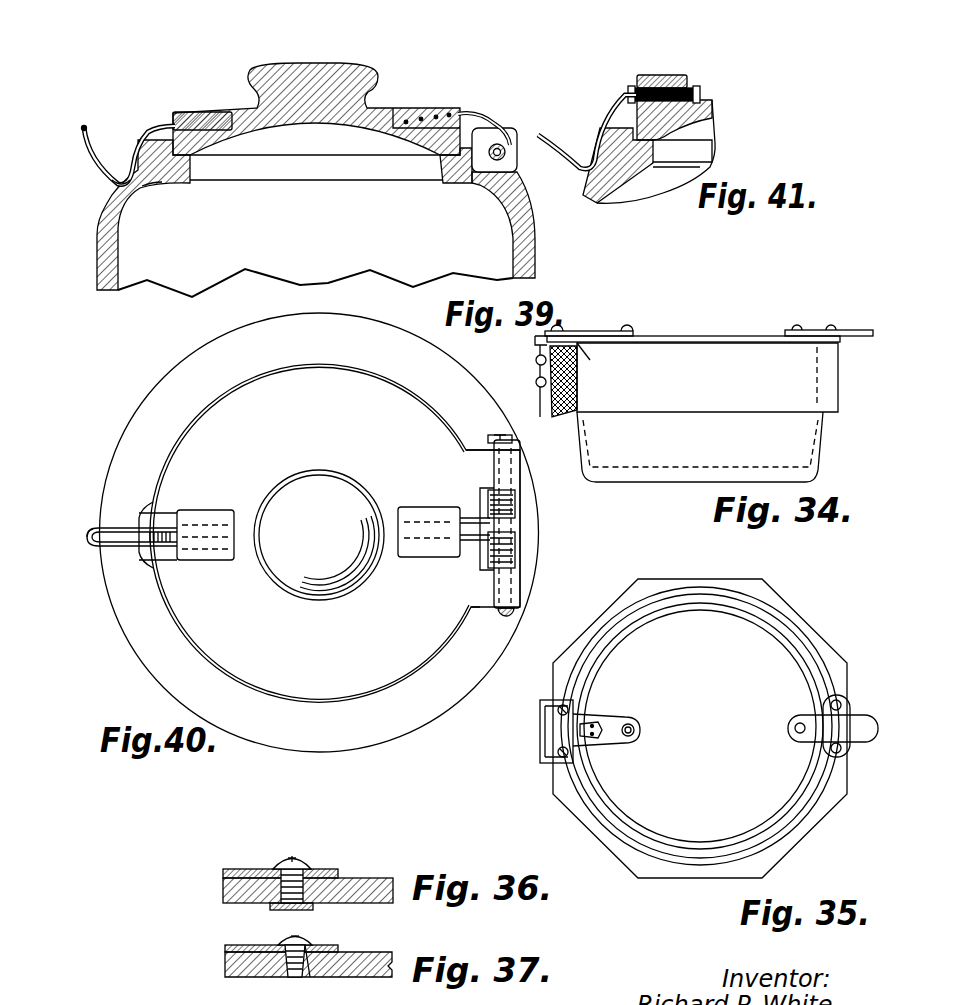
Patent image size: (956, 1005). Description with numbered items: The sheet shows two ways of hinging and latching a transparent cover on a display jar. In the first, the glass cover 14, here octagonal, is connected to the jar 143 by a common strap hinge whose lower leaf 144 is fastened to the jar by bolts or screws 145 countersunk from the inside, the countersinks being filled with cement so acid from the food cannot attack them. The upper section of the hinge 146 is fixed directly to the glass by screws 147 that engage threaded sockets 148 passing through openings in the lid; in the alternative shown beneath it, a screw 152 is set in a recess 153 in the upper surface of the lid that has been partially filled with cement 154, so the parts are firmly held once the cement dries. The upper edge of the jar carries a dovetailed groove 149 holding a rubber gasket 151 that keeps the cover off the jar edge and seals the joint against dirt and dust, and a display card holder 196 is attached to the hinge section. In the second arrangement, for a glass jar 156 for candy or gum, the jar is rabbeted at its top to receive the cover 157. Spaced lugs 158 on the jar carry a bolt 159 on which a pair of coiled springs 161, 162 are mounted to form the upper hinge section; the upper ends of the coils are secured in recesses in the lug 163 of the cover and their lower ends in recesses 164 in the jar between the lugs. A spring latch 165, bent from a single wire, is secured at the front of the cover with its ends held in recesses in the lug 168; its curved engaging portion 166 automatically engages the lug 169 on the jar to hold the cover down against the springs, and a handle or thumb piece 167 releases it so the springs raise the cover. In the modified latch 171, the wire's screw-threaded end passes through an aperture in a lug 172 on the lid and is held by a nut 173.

In FIG. 34, the cover 14 is at (729, 333).
In FIG. 35, the cover 14 is at (812, 628).
In FIG. 36, the cover 14 is at (215, 892).
In FIG. 37, the cover 14 is at (217, 966).
In FIG. 34, the jar 143 is at (667, 487).
In FIG. 35, the jar 143 is at (790, 620).
In FIG. 34, the lower leaf 144 is at (549, 354).
In FIG. 35, the lower leaf 144 is at (545, 730).
In FIG. 34, the bolts or screws 145 is at (537, 382).
In FIG. 34, the upper section of the hinge 146 is at (537, 342).
In FIG. 35, the upper section of the hinge 146 is at (622, 699).
In FIG. 36, the upper section of the hinge 146 is at (246, 868).
In FIG. 37, the upper section of the hinge 146 is at (262, 945).
In FIG. 34, the screws 147 is at (557, 331).
In FIG. 35, the screws 147 is at (636, 730).
In FIG. 36, the screws 147 is at (303, 860).
In FIG. 36, the threaded sockets 148 is at (270, 907).
In FIG. 34, the dovetailed groove 149 is at (580, 353).
In FIG. 34, the rubber gasket 151 is at (580, 333).
In FIG. 35, the rubber gasket 151 is at (760, 608).
In FIG. 37, the screw 152 is at (305, 940).
In FIG. 37, the recess 153 is at (304, 970).
In FIG. 37, the cement 154 is at (288, 975).
In FIG. 39, the glass jar 156 is at (535, 262).
In FIG. 41, the glass jar 156 is at (593, 198).
In FIG. 40, the glass jar 156 is at (153, 393).
In FIG. 39, the cover 157 is at (393, 100).
In FIG. 41, the cover 157 is at (713, 102).
In FIG. 40, the cover 157 is at (192, 459).
In FIG. 39, the lugs 158 is at (497, 133).
In FIG. 40, the lugs 158 is at (515, 458).
In FIG. 39, the bolt 159 is at (507, 152).
In FIG. 40, the bolt 159 is at (514, 609).
In FIG. 39, the coiled spring 161 is at (473, 188).
In FIG. 40, the coiled spring 161 is at (517, 513).
In FIG. 40, the coiled spring 162 is at (517, 562).
In FIG. 39, the lug 163 is at (473, 92).
In FIG. 40, the lug 163 is at (410, 513).
In FIG. 39, the recesses 164 is at (517, 180).
In FIG. 39, the spring latch 165 is at (147, 124).
In FIG. 40, the spring latch 165 is at (128, 522).
In FIG. 39, the engaging portion 166 is at (120, 170).
In FIG. 39, the handle or thumb piece 167 is at (84, 124).
In FIG. 40, the handle or thumb piece 167 is at (88, 560).
In FIG. 39, the lug 168 is at (218, 98).
In FIG. 40, the lug 168 is at (194, 556).
In FIG. 39, the lug 169 is at (160, 184).
In FIG. 40, the lug 169 is at (147, 520).
In FIG. 41, the latch 171 is at (604, 93).
In FIG. 41, the lug 172 is at (670, 75).
In FIG. 41, the nut 173 is at (687, 86).
In FIG. 35, the display card holder 196 is at (610, 746).